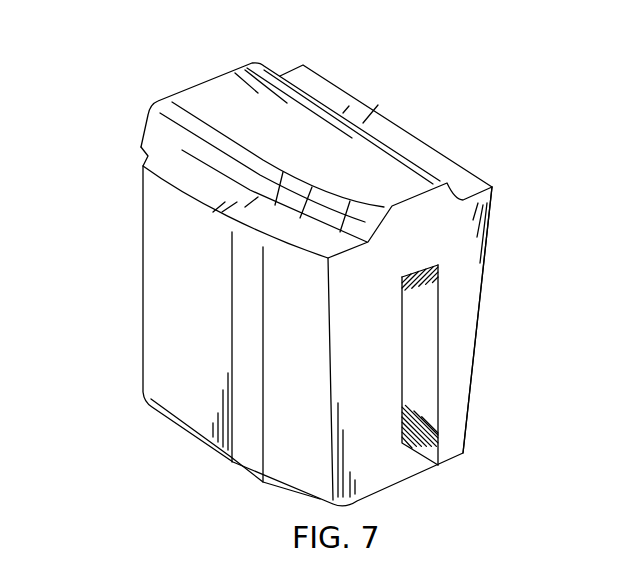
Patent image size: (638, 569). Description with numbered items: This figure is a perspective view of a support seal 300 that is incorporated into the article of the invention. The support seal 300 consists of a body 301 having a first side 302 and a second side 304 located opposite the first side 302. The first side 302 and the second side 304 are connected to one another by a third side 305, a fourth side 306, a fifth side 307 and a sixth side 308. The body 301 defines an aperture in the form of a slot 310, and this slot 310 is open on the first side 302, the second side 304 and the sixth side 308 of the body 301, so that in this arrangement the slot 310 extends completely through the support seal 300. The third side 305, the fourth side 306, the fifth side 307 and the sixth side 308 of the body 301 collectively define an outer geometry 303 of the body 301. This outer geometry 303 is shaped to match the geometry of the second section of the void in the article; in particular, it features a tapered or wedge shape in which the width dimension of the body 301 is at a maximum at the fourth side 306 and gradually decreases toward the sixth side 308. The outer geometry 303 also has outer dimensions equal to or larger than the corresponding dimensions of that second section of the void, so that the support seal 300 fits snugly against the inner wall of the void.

The support seal 300 is at (110, 117).
The body 301 is at (210, 200).
The first side 302 is at (473, 315).
The outer geometry 303 is at (390, 130).
The second side 304 is at (143, 342).
The third side 305 is at (188, 413).
The fourth side 306 is at (217, 92).
The fifth side 307 is at (492, 226).
The sixth side 308 is at (388, 488).
The slot 310 is at (435, 357).